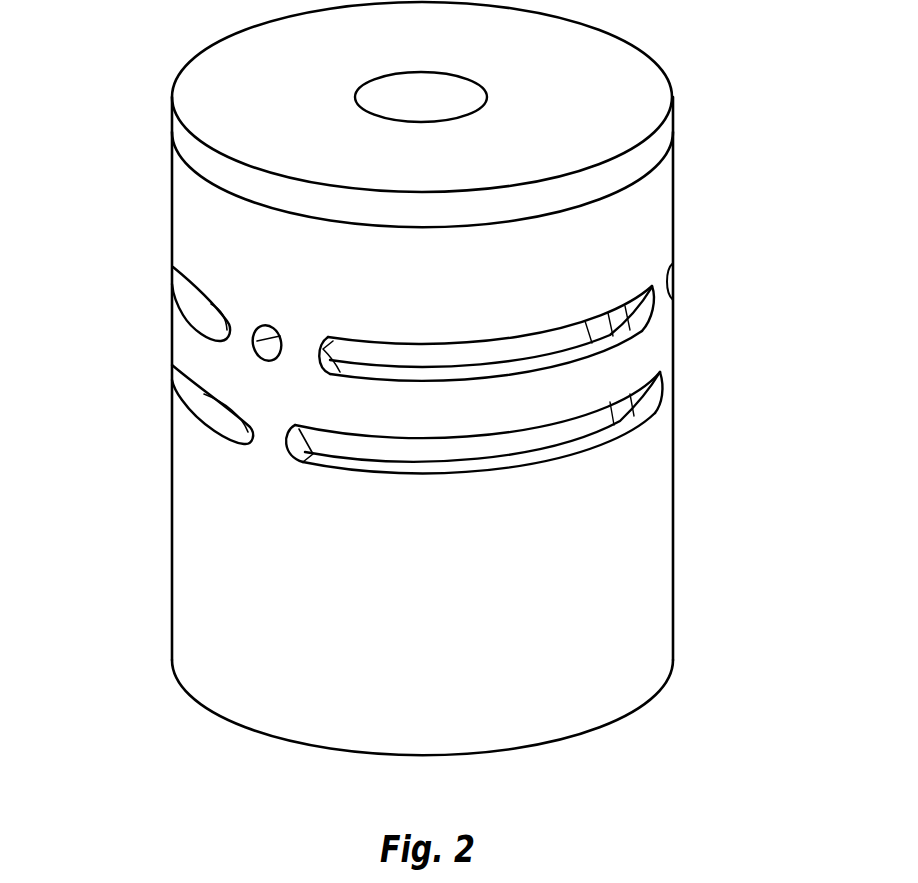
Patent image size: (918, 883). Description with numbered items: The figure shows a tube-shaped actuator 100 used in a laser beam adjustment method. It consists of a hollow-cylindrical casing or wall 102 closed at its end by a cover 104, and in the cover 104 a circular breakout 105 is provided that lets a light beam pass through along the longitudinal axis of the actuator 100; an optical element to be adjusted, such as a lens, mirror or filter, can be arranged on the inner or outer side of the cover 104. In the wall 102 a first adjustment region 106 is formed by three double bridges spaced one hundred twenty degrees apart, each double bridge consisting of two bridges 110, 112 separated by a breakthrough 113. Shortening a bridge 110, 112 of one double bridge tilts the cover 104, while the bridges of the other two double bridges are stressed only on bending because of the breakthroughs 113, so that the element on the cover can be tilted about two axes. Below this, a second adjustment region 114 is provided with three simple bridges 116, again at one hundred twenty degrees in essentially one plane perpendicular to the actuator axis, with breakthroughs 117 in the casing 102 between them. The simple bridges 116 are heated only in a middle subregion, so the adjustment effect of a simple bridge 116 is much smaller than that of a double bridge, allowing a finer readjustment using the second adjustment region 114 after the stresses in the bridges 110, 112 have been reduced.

The tube actuator 100 is at (413, 385).
The hollow-cylindrical wall 102 is at (247, 703).
The cover 104 is at (637, 62).
The circular breakout 105 is at (405, 111).
The first adjustment region 106 is at (163, 276).
The bridge 110 is at (238, 340).
The bridge 112 is at (298, 355).
The breakthrough 113 is at (447, 358).
The second adjustment region 114 is at (163, 372).
The simple bridge 116 is at (262, 447).
The breakthrough 117 is at (612, 412).